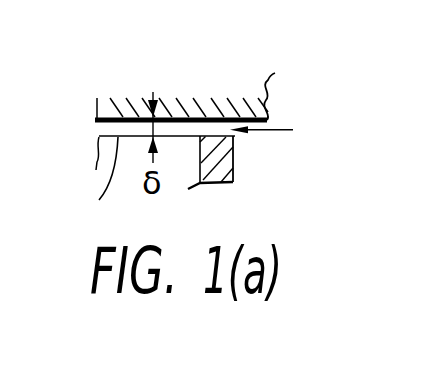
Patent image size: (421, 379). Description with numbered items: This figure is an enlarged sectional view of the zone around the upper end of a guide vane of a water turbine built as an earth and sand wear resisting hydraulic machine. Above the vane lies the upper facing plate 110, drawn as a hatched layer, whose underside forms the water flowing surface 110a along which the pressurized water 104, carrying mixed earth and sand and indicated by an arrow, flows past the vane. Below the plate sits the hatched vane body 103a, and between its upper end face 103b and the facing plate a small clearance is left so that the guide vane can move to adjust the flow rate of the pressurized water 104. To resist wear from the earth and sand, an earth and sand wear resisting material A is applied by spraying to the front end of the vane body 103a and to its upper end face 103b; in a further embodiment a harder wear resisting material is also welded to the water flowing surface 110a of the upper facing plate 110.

The upper facing plate 110 is at (198, 101).
The water flowing surface 110a is at (103, 130).
The pressurized water 104 is at (277, 129).
The vane body 103a is at (235, 162).
The upper end face 103b is at (180, 118).
The earth and sand wear resisting material A is at (93, 175).